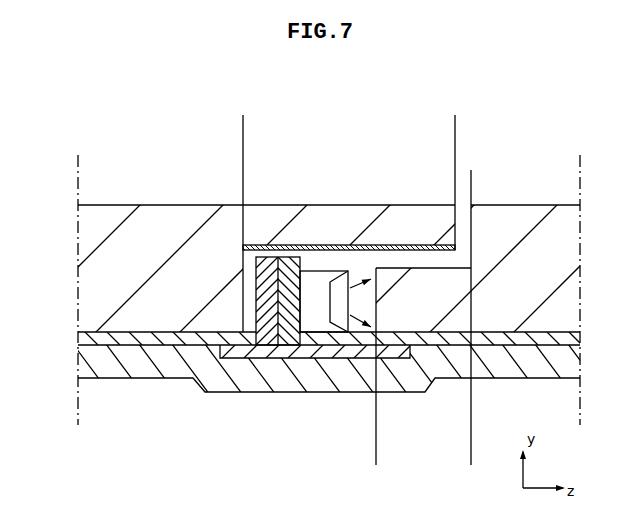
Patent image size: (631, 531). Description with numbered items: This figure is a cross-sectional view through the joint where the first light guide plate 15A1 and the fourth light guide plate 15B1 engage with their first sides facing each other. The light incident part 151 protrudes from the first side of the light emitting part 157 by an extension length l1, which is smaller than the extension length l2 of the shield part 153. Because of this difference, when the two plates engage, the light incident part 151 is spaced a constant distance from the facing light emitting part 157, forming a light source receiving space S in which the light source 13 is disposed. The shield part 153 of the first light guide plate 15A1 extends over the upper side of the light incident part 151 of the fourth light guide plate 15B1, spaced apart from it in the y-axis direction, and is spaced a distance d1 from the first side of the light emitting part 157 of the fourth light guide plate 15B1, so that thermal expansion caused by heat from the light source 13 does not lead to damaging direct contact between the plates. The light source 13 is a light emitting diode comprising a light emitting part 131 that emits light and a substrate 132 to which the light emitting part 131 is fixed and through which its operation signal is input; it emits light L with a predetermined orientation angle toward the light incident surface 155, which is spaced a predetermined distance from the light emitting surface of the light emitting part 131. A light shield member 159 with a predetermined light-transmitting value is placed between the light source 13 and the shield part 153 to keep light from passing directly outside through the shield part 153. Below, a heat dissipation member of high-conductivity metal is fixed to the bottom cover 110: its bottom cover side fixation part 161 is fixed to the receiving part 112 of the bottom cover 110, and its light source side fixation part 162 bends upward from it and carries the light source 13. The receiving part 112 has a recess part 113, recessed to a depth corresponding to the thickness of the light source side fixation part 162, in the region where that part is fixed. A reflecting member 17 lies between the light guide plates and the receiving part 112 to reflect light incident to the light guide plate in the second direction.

The first light guide plate 15A1 is at (148, 201).
The fourth light guide plate 15B1 is at (548, 201).
The light emitting part 157 is at (97, 280).
The shield part 153 is at (401, 218).
The light incident part 151 is at (428, 300).
The light incident surface 155 is at (382, 298).
The light shield member 159 is at (455, 250).
The substrate 132 is at (285, 247).
The light source side fixation part 162 is at (256, 283).
The bottom cover side fixation part 161 is at (258, 353).
The light emitting part 131 is at (316, 318).
The light source 13 is at (324, 265).
The light source receiving space S is at (344, 265).
The light L is at (358, 280).
The reflecting member 17 is at (83, 343).
The bottom cover 110 is at (133, 386).
The receiving part 112 is at (162, 370).
The recess part 113 is at (295, 392).
The extension length of the shield parts l2 is at (455, 115).
The extension length of the light incident parts l1 is at (470, 460).
The distance d1 is at (430, 178).